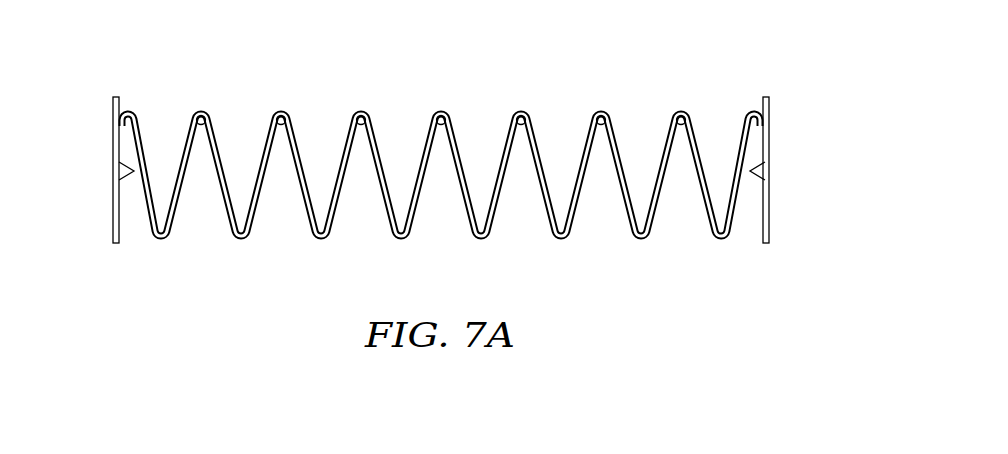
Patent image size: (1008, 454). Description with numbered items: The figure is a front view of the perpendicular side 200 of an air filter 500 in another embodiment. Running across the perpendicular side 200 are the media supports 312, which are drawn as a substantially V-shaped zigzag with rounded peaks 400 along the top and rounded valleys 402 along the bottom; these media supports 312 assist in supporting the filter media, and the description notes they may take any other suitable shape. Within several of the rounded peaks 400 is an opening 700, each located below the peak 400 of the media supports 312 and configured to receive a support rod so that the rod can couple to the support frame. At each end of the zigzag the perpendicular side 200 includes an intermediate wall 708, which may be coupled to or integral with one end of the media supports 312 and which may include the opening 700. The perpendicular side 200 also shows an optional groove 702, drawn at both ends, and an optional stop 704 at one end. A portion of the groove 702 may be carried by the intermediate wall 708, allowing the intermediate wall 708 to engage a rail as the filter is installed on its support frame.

The perpendicular side 200 is at (441, 153).
The media supports 312 is at (217, 142).
The rounded peaks 400 is at (201, 110).
The valleys 402 is at (241, 243).
The air filter 500 is at (446, 123).
The opening 700 is at (521, 110).
The groove 702 is at (118, 168).
The stop 704 is at (770, 117).
The intermediate wall 708 is at (597, 202).